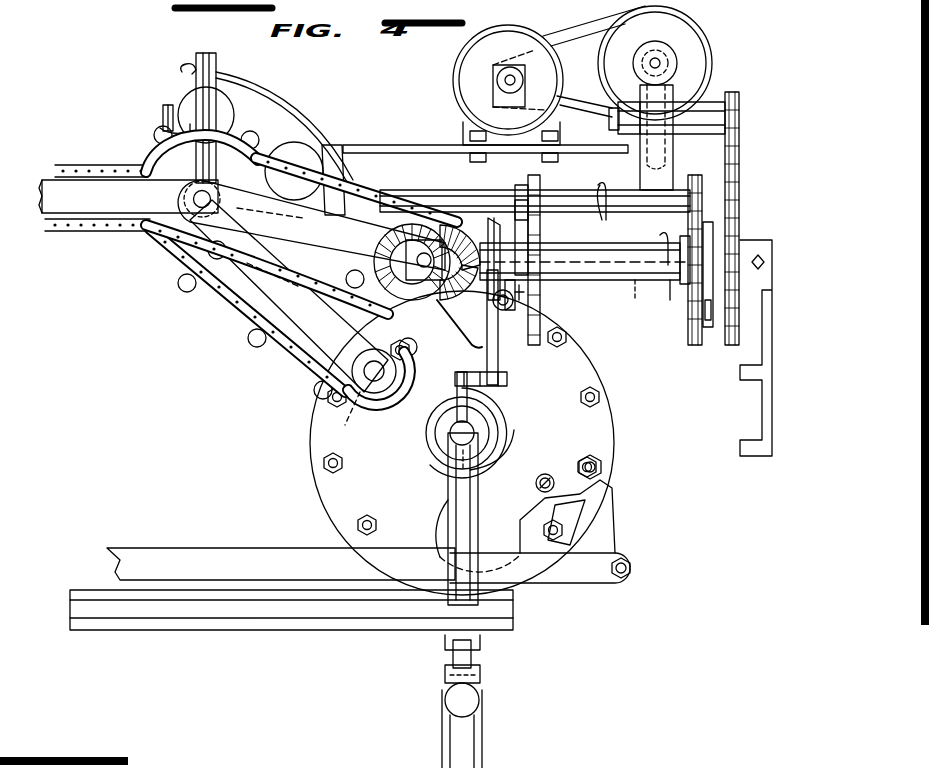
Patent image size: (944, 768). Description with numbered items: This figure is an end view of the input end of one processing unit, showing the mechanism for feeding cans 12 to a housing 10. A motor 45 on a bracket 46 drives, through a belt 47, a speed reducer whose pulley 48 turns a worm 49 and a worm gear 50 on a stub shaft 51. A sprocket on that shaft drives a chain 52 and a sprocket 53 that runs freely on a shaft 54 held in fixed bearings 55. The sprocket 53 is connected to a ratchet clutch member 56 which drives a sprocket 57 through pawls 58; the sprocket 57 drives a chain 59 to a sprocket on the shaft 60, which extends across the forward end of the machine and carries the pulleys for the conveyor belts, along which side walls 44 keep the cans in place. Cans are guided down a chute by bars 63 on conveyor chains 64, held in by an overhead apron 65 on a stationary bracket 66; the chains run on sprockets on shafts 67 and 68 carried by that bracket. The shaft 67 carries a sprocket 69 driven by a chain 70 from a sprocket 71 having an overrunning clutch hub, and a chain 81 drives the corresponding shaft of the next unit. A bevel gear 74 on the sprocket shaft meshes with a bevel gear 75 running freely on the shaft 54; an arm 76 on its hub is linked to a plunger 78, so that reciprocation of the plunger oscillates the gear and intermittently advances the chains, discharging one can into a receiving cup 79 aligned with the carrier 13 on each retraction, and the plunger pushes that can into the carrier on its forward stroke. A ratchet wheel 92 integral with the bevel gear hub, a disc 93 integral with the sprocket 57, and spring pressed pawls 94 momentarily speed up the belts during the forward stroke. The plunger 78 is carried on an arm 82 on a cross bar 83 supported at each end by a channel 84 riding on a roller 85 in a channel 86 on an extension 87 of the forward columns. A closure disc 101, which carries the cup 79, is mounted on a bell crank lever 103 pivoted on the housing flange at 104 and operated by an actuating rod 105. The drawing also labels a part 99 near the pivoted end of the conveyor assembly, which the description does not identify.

The housing 10 is at (318, 446).
The can 12 is at (218, 105).
The carrier 13 is at (500, 430).
The side wall 44 is at (162, 108).
The motor 45 is at (470, 66).
The bracket 46 is at (425, 144).
The belt 47 is at (583, 40).
The pulley 48 is at (700, 50).
The worm 49 is at (665, 63).
The worm gear 50 is at (672, 155).
The stub shaft 51 is at (700, 110).
The chain 52 is at (740, 165).
The sprocket 53 is at (735, 345).
The shaft 54 is at (632, 280).
The fixed bearing 55 is at (395, 250).
The ratchet clutch member 56 is at (712, 218).
The sprocket 57 is at (693, 326).
The pawl 58 is at (708, 335).
The chain 59 is at (676, 240).
The shaft 60 is at (560, 200).
The bar 63 is at (153, 134).
The conveyor chain 64 is at (222, 290).
The overhead apron 65 is at (286, 130).
The stationary bracket 66 is at (183, 69).
The shaft 67 is at (175, 235).
The shaft 68 is at (374, 394).
The sprocket 69 is at (148, 233).
The chain 70 is at (360, 188).
The sprocket 71 is at (400, 205).
The bevel gear 74 is at (452, 225).
The bevel gear 75 is at (492, 218).
The arm 76 is at (500, 360).
The plunger 78 is at (452, 425).
The receiving cup 79 is at (495, 448).
The chain 81 is at (100, 240).
The arm 82 is at (452, 478).
The cross bar 83 is at (337, 620).
The channel 84 is at (482, 648).
The roller 85 is at (452, 655).
The channel 86 is at (446, 680).
The extension 87 is at (480, 705).
The ratchet wheel 92 is at (528, 236).
The disc 93 is at (541, 298).
The spring pressed pawl 94 is at (517, 302).
The pivot bar 99 is at (185, 130).
The closure disc 101 is at (407, 502).
The bell crank lever 103 is at (612, 520).
The pivot 104 is at (604, 462).
The actuating rod 105 is at (550, 575).